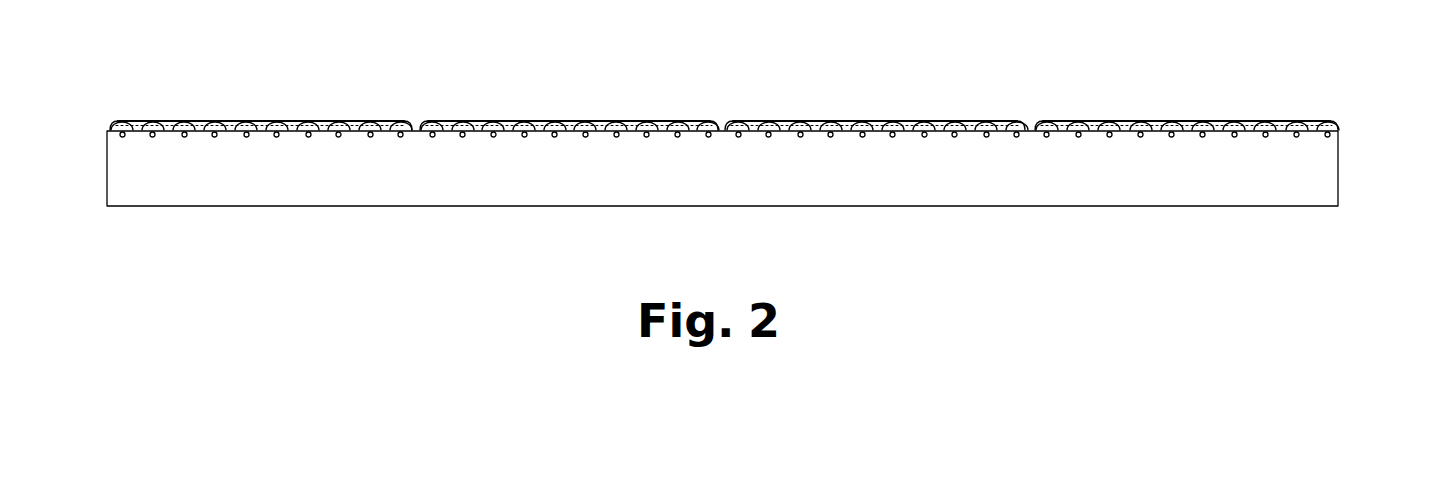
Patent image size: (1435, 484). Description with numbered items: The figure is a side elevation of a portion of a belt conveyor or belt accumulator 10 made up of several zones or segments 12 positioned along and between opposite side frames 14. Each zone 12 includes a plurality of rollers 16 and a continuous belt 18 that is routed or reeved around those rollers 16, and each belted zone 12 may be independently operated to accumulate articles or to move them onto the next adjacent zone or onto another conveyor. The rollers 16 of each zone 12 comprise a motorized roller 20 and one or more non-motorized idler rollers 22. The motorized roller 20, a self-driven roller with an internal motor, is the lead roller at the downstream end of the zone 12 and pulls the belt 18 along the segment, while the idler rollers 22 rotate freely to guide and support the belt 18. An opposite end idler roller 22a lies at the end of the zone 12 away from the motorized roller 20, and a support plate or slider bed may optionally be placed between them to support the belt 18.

The belt conveyor 10 is at (734, 206).
The zone 12 is at (734, 177).
The side frame 14 is at (745, 207).
The roller 16 is at (233, 119).
The continuous belt 18 is at (734, 96).
The motorized roller 20 is at (125, 121).
The idler roller 22 is at (152, 121).
The opposite end idler roller 22a is at (408, 121).